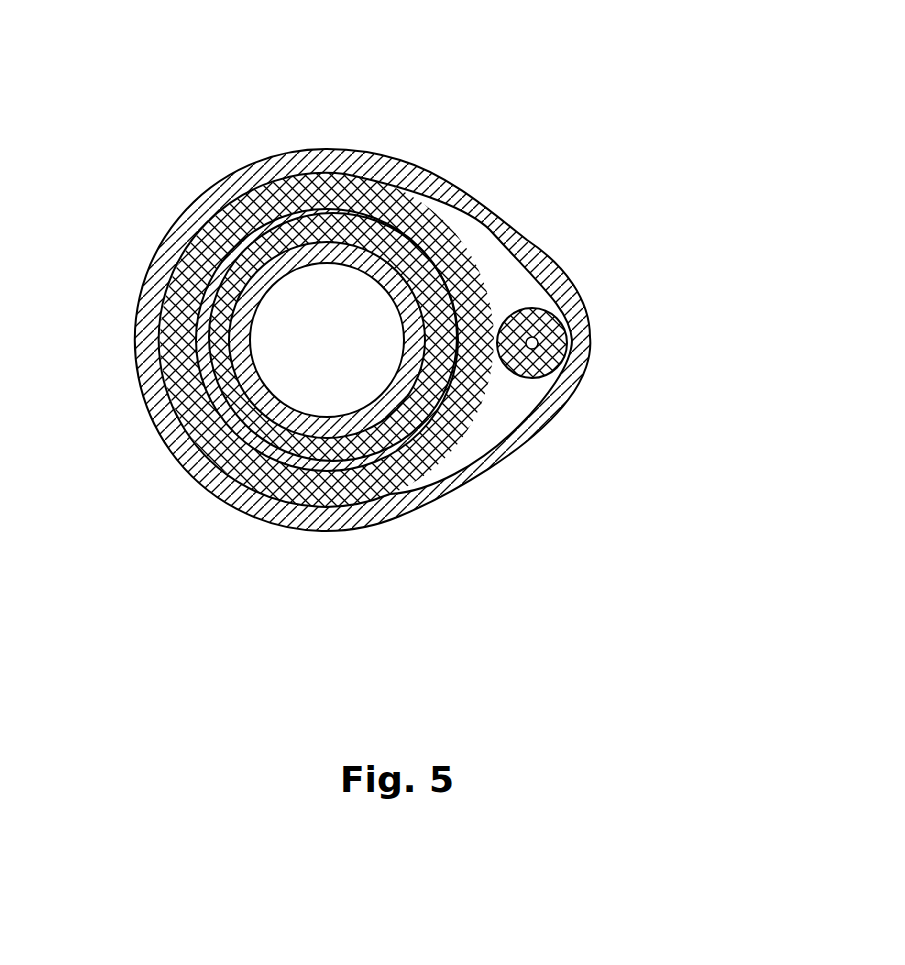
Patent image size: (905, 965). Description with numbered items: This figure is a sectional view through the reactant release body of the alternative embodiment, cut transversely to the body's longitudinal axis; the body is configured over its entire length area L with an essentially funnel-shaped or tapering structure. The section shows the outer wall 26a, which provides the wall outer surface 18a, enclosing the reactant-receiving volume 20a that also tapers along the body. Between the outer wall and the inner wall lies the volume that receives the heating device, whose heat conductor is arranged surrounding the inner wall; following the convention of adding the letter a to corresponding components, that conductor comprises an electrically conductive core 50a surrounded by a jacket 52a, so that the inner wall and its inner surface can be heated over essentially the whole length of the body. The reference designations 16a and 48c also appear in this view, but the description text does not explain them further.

The length area L is at (110, 123).
The catheter shaft 16a is at (682, 222).
The wall outer surface 18a is at (188, 473).
The reactant-receiving volume 20a is at (311, 325).
The outer wall 26a is at (404, 158).
The auxiliary lumen tube 48c is at (527, 386).
The electrically conductive core 50a is at (343, 467).
The jacket 52a is at (405, 483).